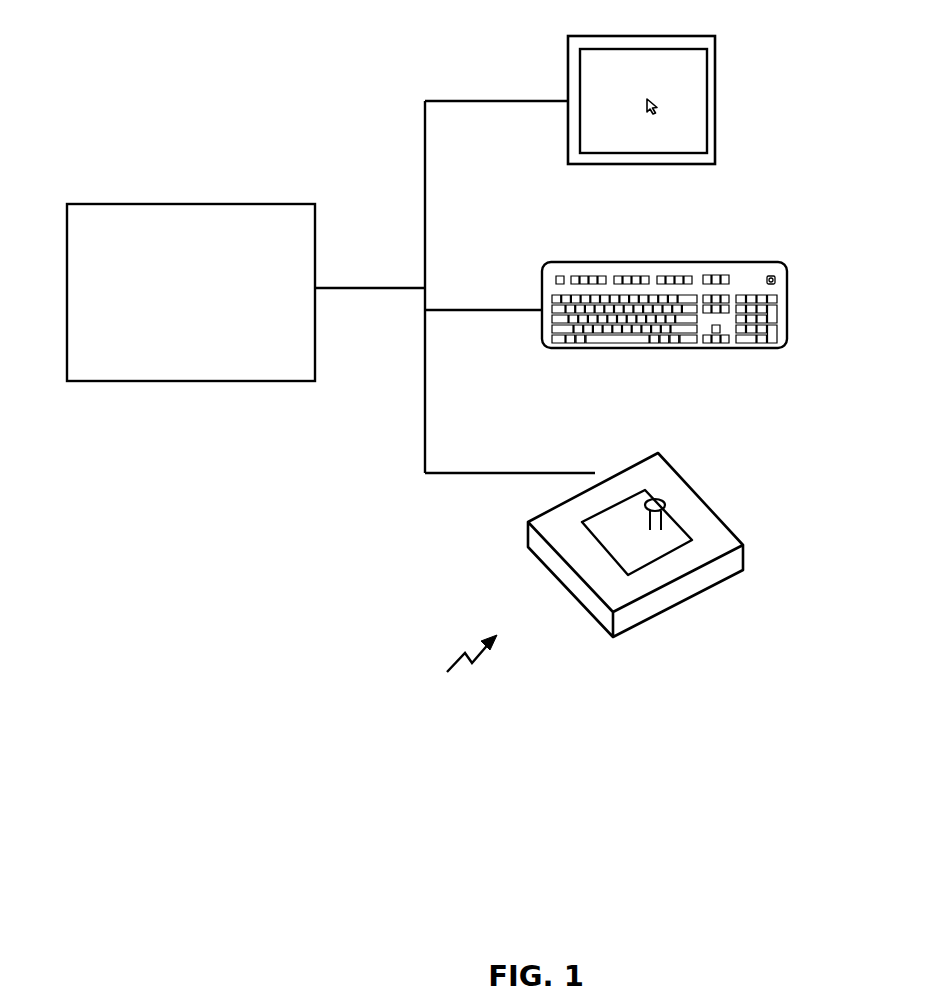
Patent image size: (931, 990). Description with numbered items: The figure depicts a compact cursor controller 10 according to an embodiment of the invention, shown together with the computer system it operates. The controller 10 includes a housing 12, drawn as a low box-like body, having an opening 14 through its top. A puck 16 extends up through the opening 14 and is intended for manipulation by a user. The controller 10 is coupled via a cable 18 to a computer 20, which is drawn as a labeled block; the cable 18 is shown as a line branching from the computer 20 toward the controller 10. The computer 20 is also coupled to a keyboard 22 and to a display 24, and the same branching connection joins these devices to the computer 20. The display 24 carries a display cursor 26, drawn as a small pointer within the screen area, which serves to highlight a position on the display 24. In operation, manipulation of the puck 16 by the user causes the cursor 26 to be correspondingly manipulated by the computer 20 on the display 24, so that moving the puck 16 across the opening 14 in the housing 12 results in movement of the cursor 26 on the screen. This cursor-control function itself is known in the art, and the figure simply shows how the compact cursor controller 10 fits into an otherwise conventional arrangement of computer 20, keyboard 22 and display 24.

The compact cursor controller 10 is at (457, 671).
The housing 12 is at (743, 553).
The opening 14 is at (690, 537).
The puck 16 is at (665, 508).
The cable 18 is at (491, 475).
The computer 20 is at (172, 204).
The keyboard 22 is at (787, 321).
The display 24 is at (659, 36).
The display cursor 26 is at (662, 105).